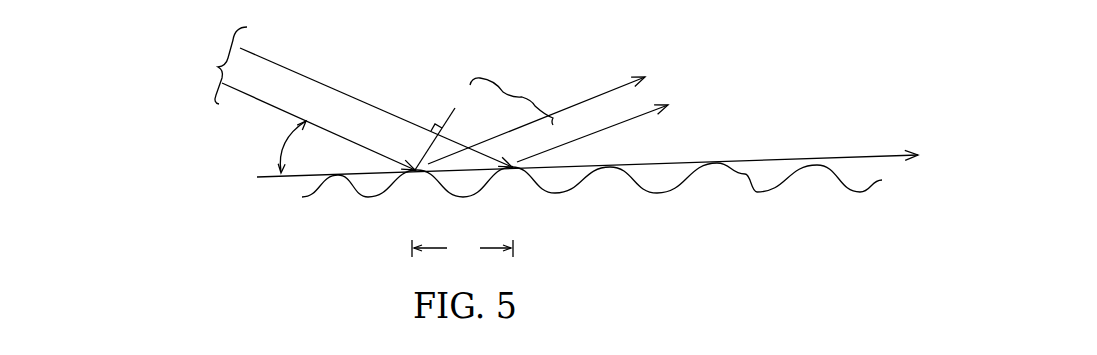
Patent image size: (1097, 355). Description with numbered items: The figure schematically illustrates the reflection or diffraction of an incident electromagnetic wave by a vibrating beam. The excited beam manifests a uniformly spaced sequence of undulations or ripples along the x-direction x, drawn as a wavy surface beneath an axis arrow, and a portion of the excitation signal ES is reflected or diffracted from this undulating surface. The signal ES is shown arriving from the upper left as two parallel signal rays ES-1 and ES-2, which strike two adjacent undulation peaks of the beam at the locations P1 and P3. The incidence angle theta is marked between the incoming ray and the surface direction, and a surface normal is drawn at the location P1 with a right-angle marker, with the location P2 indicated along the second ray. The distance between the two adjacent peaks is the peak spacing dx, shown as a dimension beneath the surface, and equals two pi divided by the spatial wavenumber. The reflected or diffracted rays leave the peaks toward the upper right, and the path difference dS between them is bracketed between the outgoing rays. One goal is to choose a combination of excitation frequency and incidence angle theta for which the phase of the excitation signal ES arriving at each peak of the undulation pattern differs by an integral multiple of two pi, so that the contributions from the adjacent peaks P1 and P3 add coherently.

The excitation signal ES is at (166, 65).
The first signal ray ES-1 is at (351, 109).
The second signal ray ES-2 is at (521, 120).
The first undulation peak location P1 is at (419, 186).
The second location P2 is at (451, 139).
The adjacent undulation peak location P3 is at (518, 185).
The incidence angle theta is at (294, 147).
The path difference dS is at (511, 94).
The peak spacing dx is at (462, 247).
The x-direction x is at (591, 172).